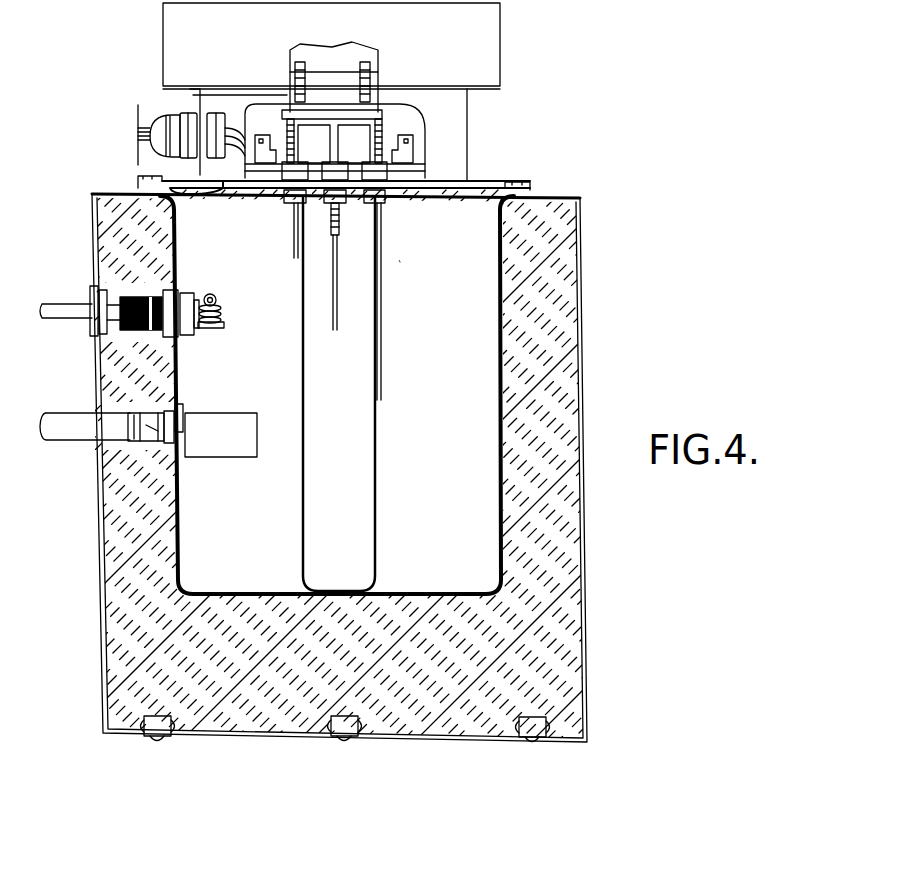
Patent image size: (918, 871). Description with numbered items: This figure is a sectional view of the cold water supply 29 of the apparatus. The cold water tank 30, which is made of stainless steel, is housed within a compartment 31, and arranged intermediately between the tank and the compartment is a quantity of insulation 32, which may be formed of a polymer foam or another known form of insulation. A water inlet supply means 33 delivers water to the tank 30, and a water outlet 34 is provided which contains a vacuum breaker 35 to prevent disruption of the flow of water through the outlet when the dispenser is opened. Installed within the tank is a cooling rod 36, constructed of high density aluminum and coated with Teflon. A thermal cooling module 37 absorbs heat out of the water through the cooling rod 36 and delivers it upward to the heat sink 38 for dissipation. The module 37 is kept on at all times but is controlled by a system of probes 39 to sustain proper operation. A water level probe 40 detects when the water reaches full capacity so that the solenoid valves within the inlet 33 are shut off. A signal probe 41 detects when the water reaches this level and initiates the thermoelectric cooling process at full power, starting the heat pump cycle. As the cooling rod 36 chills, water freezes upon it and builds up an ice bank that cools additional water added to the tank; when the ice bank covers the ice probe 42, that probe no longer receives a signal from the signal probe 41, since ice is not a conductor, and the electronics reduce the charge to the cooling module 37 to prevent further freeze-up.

The cold water supply 29 is at (555, 184).
The cold water tank 30 is at (501, 370).
The compartment 31 is at (582, 313).
The insulation 32 is at (535, 575).
The water inlet supply means 33 is at (200, 294).
The water outlet 34 is at (158, 426).
The vacuum breaker 35 is at (228, 442).
The cooling rod 36 is at (377, 515).
The thermal cooling module 37 is at (437, 121).
The heat sink 38 is at (500, 38).
The system of probes 39 is at (397, 264).
The water level probe 40 is at (295, 228).
The signal probe 41 is at (382, 325).
The ice probe 42 is at (334, 308).